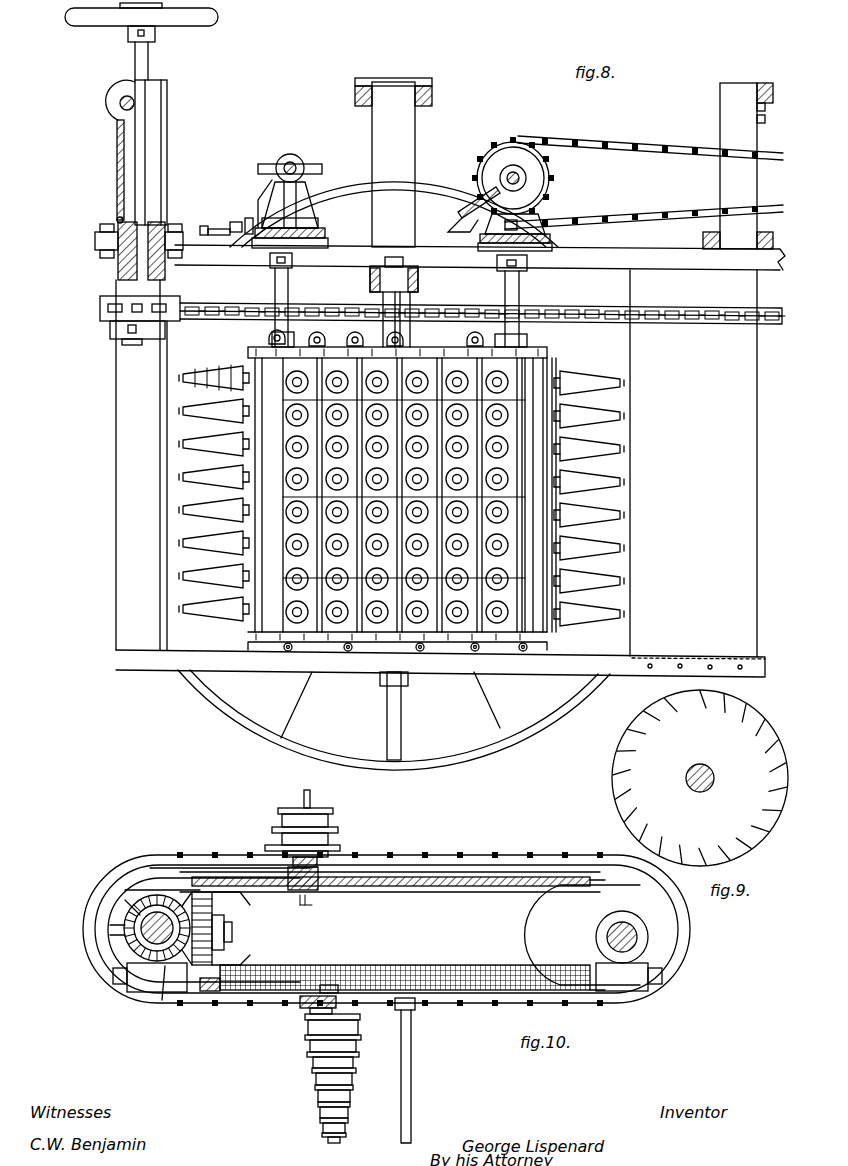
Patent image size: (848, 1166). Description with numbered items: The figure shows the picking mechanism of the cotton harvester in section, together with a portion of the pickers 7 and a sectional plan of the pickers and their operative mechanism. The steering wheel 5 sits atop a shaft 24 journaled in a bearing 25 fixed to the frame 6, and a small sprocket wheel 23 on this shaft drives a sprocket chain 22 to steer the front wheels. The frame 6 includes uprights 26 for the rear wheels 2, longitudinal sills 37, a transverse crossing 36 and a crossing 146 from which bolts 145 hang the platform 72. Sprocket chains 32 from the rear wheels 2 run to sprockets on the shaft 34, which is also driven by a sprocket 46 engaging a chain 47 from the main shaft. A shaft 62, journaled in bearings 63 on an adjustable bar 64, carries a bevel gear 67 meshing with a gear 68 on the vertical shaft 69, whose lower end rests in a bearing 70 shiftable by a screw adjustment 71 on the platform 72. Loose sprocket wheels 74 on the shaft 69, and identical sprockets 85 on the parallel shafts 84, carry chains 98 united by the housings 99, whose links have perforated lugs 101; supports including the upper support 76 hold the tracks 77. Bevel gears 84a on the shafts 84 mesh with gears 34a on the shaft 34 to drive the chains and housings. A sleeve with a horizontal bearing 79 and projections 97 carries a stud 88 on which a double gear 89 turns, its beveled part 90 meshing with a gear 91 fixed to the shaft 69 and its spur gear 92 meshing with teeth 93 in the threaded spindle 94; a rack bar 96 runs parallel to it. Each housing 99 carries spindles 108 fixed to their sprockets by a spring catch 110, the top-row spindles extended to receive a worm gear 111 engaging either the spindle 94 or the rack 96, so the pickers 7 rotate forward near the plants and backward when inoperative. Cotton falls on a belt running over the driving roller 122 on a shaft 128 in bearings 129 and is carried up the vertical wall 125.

In FIG. 8, the rear wheels 2 is at (346, 196).
In FIG. 8, the steering wheel 5 is at (122, 24).
In FIG. 8, the frame 6 is at (193, 266).
In FIG. 8, the pickers 7 is at (205, 374).
In FIG. 9, the pickers 7 is at (700, 778).
In FIG. 10, the pickers 7 is at (334, 812).
In FIG. 8, the sprocket chain 22 is at (700, 320).
In FIG. 8, the small sprocket wheel 23 is at (100, 318).
In FIG. 8, the shaft 24 is at (150, 162).
In FIG. 8, the bearing 25 is at (165, 224).
In FIG. 8, the uprights 26 is at (393, 162).
In FIG. 8, the sprocket chains 32 is at (460, 196).
In FIG. 8, the shaft 34 is at (516, 188).
In FIG. 8, the bevel gears 34a is at (548, 182).
In FIG. 8, the crossing 36 is at (548, 240).
In FIG. 8, the sills 37 is at (602, 270).
In FIG. 8, the sprocket 46 is at (560, 150).
In FIG. 8, the chain 47 is at (672, 150).
In FIG. 8, the shaft 62 is at (290, 154).
In FIG. 8, the bearings 63 is at (272, 160).
In FIG. 8, the adjustable bar 64 is at (320, 236).
In FIG. 8, the bevel gear 67 is at (300, 170).
In FIG. 8, the gear 68 is at (262, 186).
In FIG. 8, the vertical shaft 69 is at (272, 292).
In FIG. 10, the vertical shaft 69 is at (142, 926).
In FIG. 8, the bearing 70 is at (450, 755).
In FIG. 8, the screw adjustment 71 is at (388, 745).
In FIG. 8, the platform 72 is at (402, 714).
In FIG. 8, the sprocket wheels 74 is at (270, 340).
In FIG. 10, the sprocket wheels 74 is at (108, 962).
In FIG. 10, the upper support 76 is at (104, 900).
In FIG. 10, the tracks 77 is at (212, 868).
In FIG. 10, the horizontal bearing 79 is at (147, 988).
In FIG. 8, the shafts 84 is at (503, 290).
In FIG. 10, the shafts 84 is at (636, 937).
In FIG. 8, the bevel gears 84a is at (462, 236).
In FIG. 8, the sprockets 85 is at (547, 347).
In FIG. 10, the sprockets 85 is at (555, 920).
In FIG. 10, the stud 88 is at (232, 930).
In FIG. 10, the double gear 89 is at (232, 900).
In FIG. 10, the beveled part 90 is at (182, 876).
In FIG. 10, the gear 91 is at (166, 992).
In FIG. 10, the spur gear 92 is at (220, 935).
In FIG. 10, the teeth 93 is at (205, 995).
In FIG. 10, the threaded spindle 94 is at (398, 965).
In FIG. 10, the rack bar 96 is at (420, 892).
In FIG. 10, the projections 97 is at (150, 895).
In FIG. 8, the chains 98 is at (480, 348).
In FIG. 10, the chains 98 is at (418, 848).
In FIG. 8, the housings 99 is at (322, 576).
In FIG. 8, the perforated projecting lugs 101 is at (336, 341).
In FIG. 9, the spindles 108 is at (704, 764).
In FIG. 10, the spindles 108 is at (320, 868).
In FIG. 8, the spring catch 110 is at (596, 382).
In FIG. 10, the worm gear 111 is at (312, 900).
In FIG. 8, the driving roller 122 is at (104, 93).
In FIG. 8, the vertical wall 125 is at (116, 400).
In FIG. 8, the shaft 128 is at (118, 105).
In FIG. 8, the bearings 129 is at (117, 124).
In FIG. 8, the bolts 145 is at (405, 262).
In FIG. 8, the crossing 146 is at (388, 262).